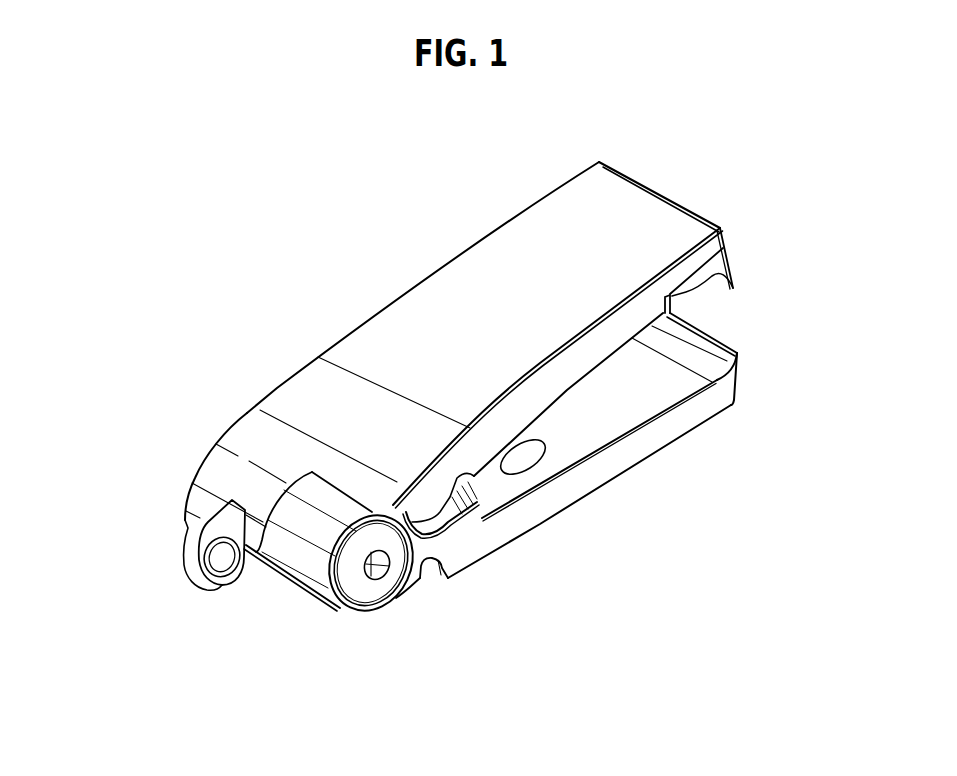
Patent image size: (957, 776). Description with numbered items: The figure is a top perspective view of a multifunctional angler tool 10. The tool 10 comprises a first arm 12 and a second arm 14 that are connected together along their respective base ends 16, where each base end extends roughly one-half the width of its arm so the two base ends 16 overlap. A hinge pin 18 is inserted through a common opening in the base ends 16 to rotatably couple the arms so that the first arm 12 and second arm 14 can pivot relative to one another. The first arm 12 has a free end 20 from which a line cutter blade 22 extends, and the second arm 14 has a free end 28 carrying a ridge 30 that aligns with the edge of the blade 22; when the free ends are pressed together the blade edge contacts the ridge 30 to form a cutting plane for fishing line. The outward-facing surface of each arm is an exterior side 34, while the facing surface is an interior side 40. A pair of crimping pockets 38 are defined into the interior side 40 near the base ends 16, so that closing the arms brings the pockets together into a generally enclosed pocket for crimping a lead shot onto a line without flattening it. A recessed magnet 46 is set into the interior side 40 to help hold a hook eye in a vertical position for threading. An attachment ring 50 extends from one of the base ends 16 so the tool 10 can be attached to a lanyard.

The tool 10 is at (320, 266).
The first arm 12 is at (497, 213).
The second arm 14 is at (654, 472).
The base ends 16 is at (169, 470).
The hinge pin 18 is at (367, 588).
The free end 20 is at (648, 212).
The line cutter blade 22 is at (717, 274).
The free end 28 is at (731, 385).
The ridge 30 is at (712, 338).
The exterior side 34 is at (444, 361).
The crimping pockets 38 is at (478, 480).
The interior side 40 is at (589, 414).
The recessed magnet 46 is at (525, 458).
The attachment ring 50 is at (182, 562).